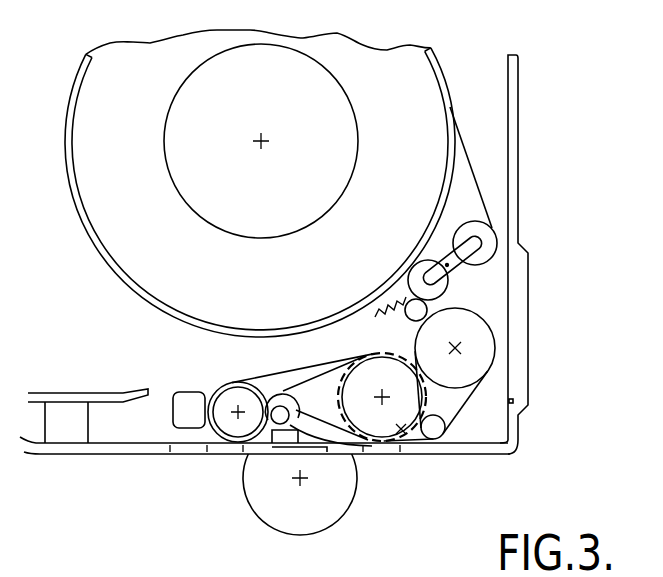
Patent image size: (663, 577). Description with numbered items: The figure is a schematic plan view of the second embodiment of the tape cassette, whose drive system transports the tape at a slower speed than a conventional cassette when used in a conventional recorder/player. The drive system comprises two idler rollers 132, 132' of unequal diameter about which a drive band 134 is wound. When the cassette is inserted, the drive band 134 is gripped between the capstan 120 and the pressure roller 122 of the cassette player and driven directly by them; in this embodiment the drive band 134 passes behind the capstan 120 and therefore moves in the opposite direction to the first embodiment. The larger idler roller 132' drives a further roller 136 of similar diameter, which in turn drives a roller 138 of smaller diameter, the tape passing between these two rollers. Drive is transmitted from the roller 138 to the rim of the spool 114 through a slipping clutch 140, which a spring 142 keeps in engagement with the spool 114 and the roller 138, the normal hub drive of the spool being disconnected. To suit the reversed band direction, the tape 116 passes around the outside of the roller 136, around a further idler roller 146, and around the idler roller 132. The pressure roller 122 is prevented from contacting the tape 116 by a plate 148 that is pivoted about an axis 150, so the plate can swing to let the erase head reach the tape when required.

The spool 114 is at (330, 152).
The tape 116 is at (98, 448).
The capstan 120 is at (278, 408).
The pressure roller 122 is at (263, 505).
The idler roller 132 is at (214, 390).
The idler roller 132' is at (447, 457).
The drive band 134 is at (373, 450).
The roller 136 is at (473, 365).
The roller 138 is at (425, 307).
The slipping clutch 140 is at (420, 265).
The spring 142 is at (395, 297).
The idler roller 146 is at (430, 432).
The plate 148 is at (273, 437).
The axis 150 is at (320, 455).